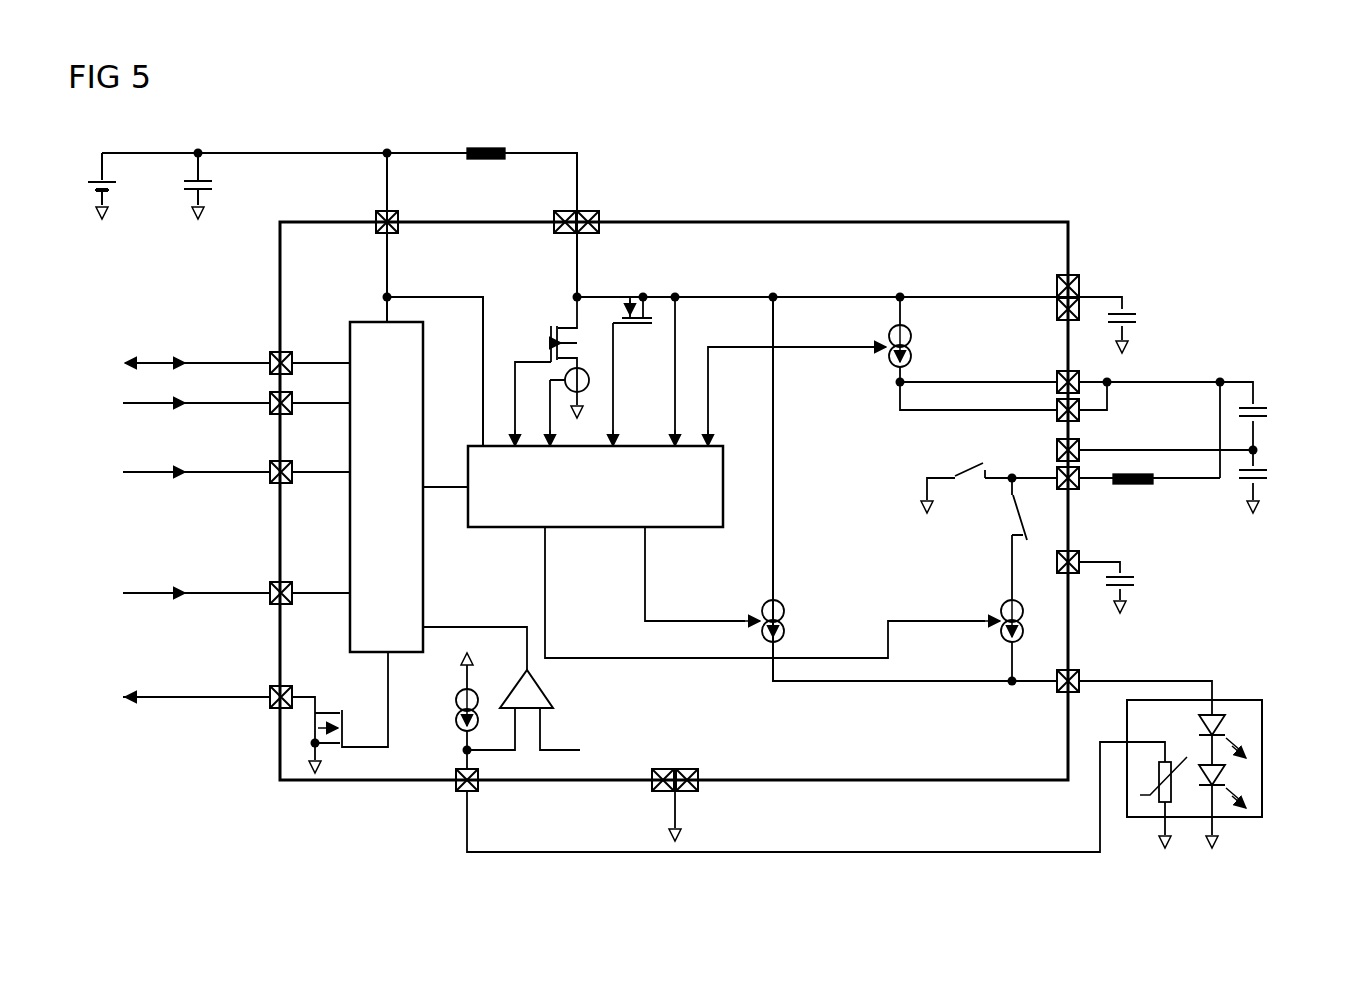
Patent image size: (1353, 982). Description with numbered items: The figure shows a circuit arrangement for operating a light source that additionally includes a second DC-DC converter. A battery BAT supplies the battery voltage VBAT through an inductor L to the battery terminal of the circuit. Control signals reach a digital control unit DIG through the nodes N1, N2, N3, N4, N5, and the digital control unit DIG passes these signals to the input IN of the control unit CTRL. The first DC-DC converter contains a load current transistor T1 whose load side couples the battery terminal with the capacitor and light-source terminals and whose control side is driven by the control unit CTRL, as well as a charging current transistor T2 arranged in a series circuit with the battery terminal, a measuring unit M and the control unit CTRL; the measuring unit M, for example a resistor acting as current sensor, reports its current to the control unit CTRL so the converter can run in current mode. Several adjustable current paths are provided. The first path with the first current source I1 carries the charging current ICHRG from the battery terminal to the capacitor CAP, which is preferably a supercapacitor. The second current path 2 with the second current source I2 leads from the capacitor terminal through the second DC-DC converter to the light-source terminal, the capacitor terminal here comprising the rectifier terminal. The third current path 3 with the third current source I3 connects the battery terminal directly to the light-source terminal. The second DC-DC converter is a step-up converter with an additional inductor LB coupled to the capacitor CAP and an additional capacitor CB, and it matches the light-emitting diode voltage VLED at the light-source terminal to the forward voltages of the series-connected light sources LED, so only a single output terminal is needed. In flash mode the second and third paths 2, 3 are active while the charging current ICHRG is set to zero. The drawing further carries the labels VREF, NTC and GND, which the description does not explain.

The second adjustable current path 2 is at (1012, 568).
The third adjustable current path 3 is at (775, 480).
The battery BAT is at (105, 183).
The battery voltage VBAT is at (165, 171).
The inductor L is at (486, 147).
The charging current transistor T2 is at (549, 345).
The measuring unit M is at (588, 370).
The load current transistor T1 is at (640, 330).
The node N1 is at (264, 371).
The node N2 is at (264, 409).
The node N3 is at (264, 479).
The node N4 is at (264, 599).
The node N5 is at (264, 703).
The digital control unit DIG is at (386, 487).
The input of the control unit IN is at (448, 484).
The control unit CTRL is at (595, 486).
The first adjustable current source I1 is at (912, 336).
The charging current ICHRG is at (826, 369).
The second adjustable current source I2 is at (997, 606).
The third adjustable current source I3 is at (786, 606).
The capacitor CAP is at (1283, 435).
The additional inductor LB is at (1153, 484).
The additional capacitor CB is at (1145, 587).
The light-emitting diode LED is at (1234, 700).
The light-emitting diode voltage VLED is at (1227, 758).
The reference voltage VREF is at (533, 698).
The NTC thermistor pin NTC is at (797, 797).
The ground pin GND is at (656, 805).